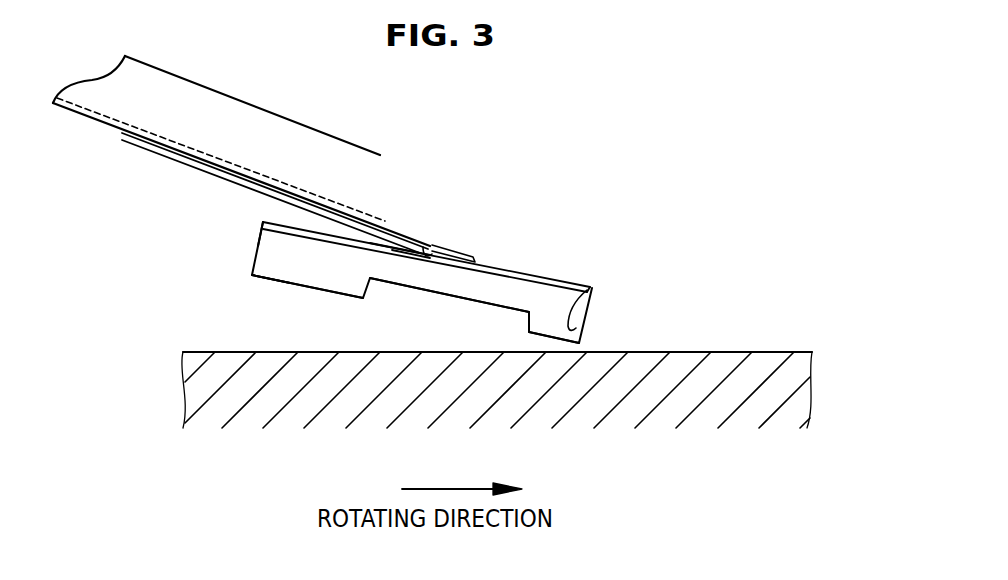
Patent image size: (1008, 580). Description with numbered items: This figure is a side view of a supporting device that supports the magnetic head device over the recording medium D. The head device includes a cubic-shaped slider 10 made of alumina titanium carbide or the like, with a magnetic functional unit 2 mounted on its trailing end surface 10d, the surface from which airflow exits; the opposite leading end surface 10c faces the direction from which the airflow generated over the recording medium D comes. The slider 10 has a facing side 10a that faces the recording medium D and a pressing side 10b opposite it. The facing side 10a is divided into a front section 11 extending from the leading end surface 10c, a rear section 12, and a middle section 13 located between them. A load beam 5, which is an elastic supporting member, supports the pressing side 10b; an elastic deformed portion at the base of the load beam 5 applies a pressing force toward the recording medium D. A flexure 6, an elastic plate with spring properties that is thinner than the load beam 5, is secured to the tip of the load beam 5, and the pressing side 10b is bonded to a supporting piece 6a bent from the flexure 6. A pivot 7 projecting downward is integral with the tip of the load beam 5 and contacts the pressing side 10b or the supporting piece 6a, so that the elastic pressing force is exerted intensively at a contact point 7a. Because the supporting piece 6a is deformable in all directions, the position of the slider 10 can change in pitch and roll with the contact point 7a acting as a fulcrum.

The magnetic functional unit 2 is at (591, 287).
The load beam 5 is at (287, 133).
The flexure 6 is at (557, 280).
The supporting piece 6a is at (388, 248).
The pivot 7 is at (440, 248).
The contact point 7a is at (424, 262).
The slider 10 is at (500, 278).
The facing side 10a is at (293, 300).
The pressing side 10b is at (422, 250).
The leading end surface 10c is at (258, 246).
The trailing end surface 10d is at (589, 323).
The front section 11 is at (268, 282).
The rear section 12 is at (553, 347).
The middle section 13 is at (458, 303).
The recording medium D is at (772, 397).